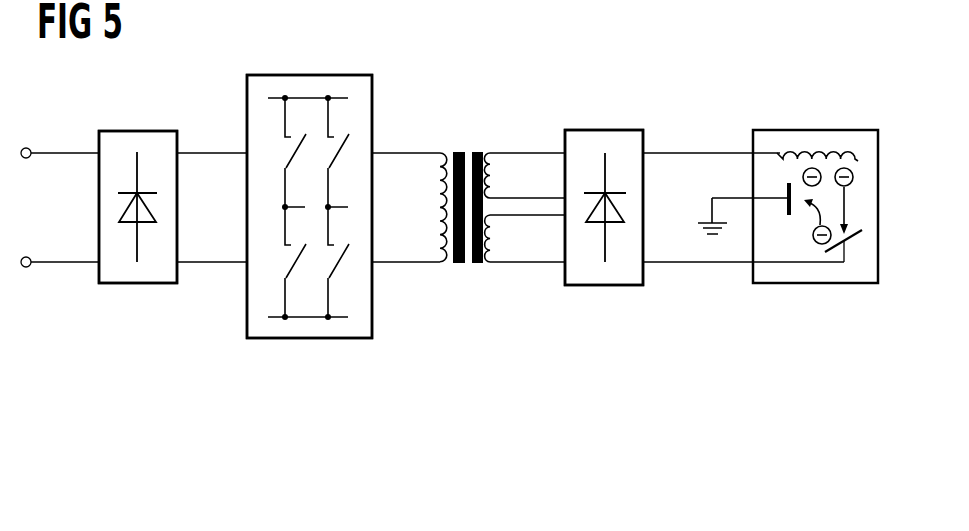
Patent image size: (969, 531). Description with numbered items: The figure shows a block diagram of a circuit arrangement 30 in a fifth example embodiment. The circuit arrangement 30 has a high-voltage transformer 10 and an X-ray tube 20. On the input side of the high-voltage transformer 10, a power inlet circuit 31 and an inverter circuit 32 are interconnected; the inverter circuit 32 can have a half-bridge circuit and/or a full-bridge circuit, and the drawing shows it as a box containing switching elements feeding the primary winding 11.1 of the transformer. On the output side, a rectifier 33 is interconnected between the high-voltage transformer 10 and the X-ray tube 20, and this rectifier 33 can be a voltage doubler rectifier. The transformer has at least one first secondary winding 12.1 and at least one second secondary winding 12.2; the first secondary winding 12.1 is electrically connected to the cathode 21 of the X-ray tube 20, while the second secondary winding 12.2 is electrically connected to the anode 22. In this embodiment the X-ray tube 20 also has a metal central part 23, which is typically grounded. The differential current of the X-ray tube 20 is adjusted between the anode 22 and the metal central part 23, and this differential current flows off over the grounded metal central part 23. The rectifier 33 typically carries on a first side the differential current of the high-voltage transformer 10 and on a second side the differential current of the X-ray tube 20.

The high-voltage transformer 10 is at (459, 308).
The primary winding 11.1 is at (442, 152).
The first secondary winding 12.1 is at (493, 152).
The second secondary winding 12.2 is at (493, 263).
The X-ray tube 20 is at (780, 130).
The cathode 21 is at (838, 147).
The anode 22 is at (858, 243).
The metal central part 23 is at (778, 193).
The circuit arrangement 30 is at (211, 92).
The power inlet circuit 31 is at (132, 284).
The inverter circuit 32 is at (300, 339).
The rectifier 33 is at (597, 286).